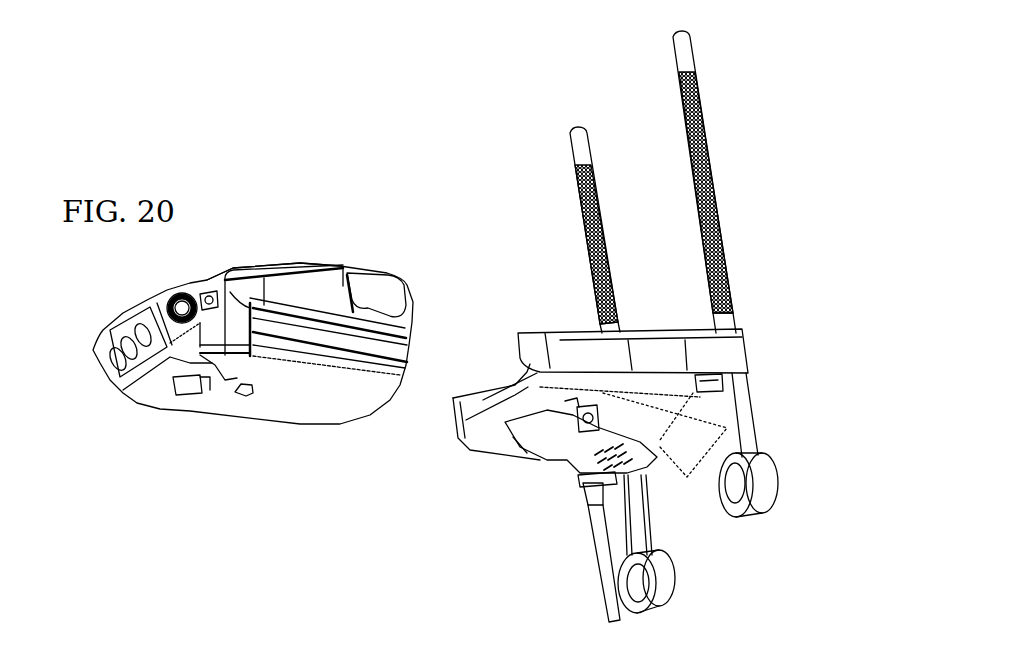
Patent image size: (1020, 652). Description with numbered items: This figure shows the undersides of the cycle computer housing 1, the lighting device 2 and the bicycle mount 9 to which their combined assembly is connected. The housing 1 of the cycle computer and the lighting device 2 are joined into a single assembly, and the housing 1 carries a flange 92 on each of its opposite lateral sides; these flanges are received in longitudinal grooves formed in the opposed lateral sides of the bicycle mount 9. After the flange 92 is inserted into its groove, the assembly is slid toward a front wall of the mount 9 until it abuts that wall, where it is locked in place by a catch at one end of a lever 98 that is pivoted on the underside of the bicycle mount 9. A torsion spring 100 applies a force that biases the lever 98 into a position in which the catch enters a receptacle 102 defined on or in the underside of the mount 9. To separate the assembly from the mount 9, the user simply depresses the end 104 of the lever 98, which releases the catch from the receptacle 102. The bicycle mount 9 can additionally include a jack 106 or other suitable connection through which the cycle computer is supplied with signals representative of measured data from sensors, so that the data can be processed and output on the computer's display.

The cycle computer housing 1 is at (222, 275).
The lighting device 2 is at (140, 400).
The bicycle mount 9 is at (700, 345).
The flange 92 is at (318, 348).
The lever 98 is at (543, 447).
The torsion spring 100 is at (604, 418).
The receptacle 102 is at (246, 396).
The end of the lever 104 is at (640, 462).
The jack 106 is at (582, 493).